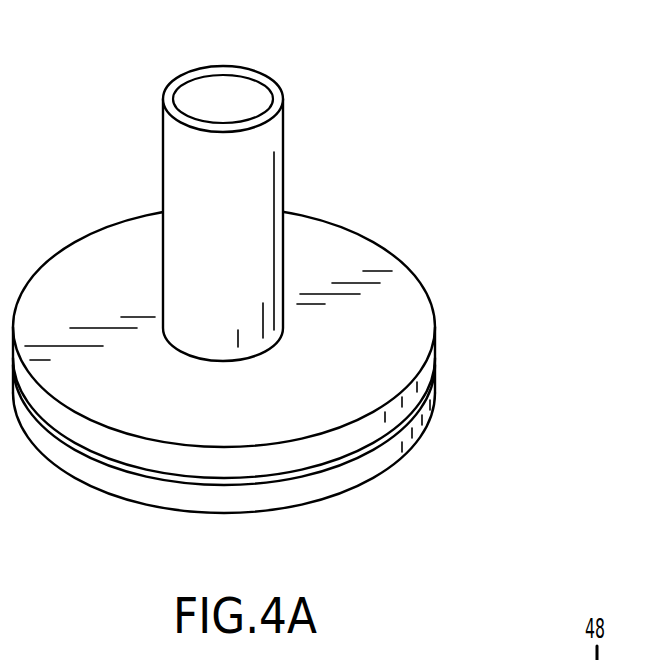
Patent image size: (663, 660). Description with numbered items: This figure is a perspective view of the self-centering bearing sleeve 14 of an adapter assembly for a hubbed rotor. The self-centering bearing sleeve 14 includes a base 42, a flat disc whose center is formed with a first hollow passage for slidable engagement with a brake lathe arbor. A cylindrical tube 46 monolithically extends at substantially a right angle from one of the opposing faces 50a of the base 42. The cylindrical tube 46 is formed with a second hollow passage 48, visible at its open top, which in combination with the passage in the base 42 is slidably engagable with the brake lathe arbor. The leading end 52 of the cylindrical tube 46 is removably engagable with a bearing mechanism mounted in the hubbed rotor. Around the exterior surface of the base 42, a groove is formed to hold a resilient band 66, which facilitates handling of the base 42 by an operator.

The self-centering bearing sleeve 14 is at (484, 158).
The base 42 is at (413, 303).
The cylindrical tube 46 is at (283, 170).
The second hollow passage 48 is at (255, 92).
The opposing face 50a is at (102, 238).
The leading end 52 is at (175, 93).
The resilient band 66 is at (370, 445).